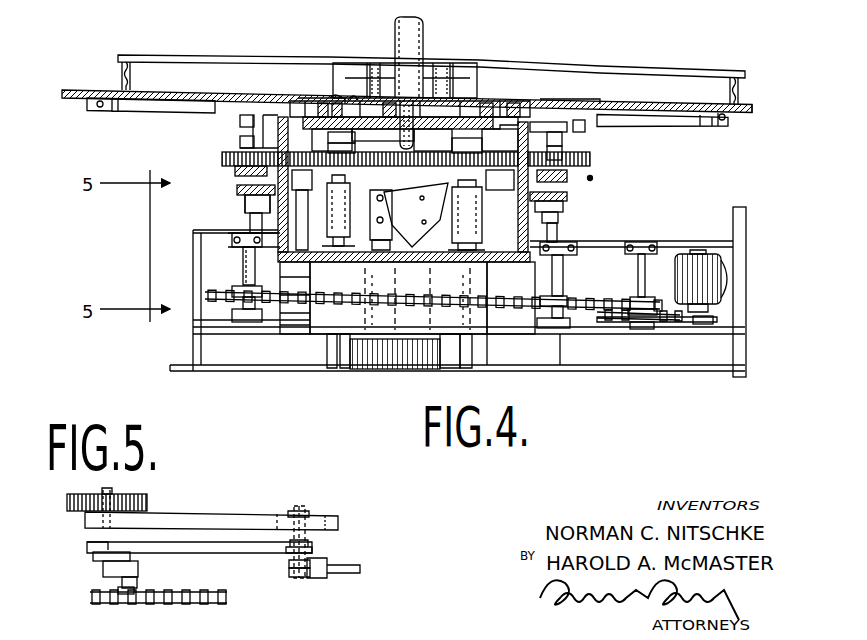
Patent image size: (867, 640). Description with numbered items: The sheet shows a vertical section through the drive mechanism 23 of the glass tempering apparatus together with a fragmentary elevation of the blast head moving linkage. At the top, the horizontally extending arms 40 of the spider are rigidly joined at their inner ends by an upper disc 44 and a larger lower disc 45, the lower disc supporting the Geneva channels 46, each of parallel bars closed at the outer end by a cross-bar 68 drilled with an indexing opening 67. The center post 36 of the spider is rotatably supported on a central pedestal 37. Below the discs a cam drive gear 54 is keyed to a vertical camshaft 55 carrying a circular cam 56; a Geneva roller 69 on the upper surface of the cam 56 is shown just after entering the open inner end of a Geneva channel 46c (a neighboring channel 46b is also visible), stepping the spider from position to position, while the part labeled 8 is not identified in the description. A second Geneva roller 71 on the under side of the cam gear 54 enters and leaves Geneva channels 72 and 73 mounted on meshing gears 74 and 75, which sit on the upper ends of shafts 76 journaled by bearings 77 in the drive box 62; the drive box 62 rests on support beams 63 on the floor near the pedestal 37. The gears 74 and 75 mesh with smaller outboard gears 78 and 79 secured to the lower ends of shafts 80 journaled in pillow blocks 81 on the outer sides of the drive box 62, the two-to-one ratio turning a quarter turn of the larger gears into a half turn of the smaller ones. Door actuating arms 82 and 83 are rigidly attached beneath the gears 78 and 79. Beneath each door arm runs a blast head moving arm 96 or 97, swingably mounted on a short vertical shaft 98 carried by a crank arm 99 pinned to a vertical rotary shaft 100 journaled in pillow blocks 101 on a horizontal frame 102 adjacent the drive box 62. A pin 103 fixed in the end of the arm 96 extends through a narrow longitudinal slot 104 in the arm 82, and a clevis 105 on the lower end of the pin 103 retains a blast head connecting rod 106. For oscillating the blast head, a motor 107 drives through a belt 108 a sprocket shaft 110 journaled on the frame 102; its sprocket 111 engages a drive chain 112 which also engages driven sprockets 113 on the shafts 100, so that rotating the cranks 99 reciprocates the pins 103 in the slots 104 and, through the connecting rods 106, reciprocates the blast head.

In FIG. 4, the bearing block 8 is at (562, 151).
In FIG. 4, the drive mechanism 23 is at (598, 391).
In FIG. 4, the center post 36 is at (421, 37).
In FIG. 4, the central pedestal 37 is at (362, 263).
In FIG. 4, the horizontally extending arms 40 is at (605, 68).
In FIG. 4, the upper disc 44 is at (510, 62).
In FIG. 4, the lower disc 45 is at (749, 105).
In FIG. 4, the Geneva channels 46 is at (124, 112).
In FIG. 4, the support bar portion 46b is at (542, 100).
In FIG. 4, the Geneva channel 46c is at (300, 100).
In FIG. 4, the cam drive gear 54 is at (562, 139).
In FIG. 4, the vertical camshaft 55 is at (452, 122).
In FIG. 4, the circular cam 56 is at (531, 124).
In FIG. 4, the drive box 62 is at (498, 271).
In FIG. 4, the support beams 63 is at (306, 273).
In FIG. 4, the indexing openings 67 is at (94, 105).
In FIG. 4, the cross-bars 68 is at (715, 124).
In FIG. 4, the Geneva roller 69 is at (350, 97).
In FIG. 4, the second Geneva roller 71 is at (318, 138).
In FIG. 4, the Geneva channel 72 is at (320, 150).
In FIG. 4, the Geneva channel 73 is at (484, 152).
In FIG. 4, the meshing gear 74 is at (315, 169).
In FIG. 4, the meshing gear 75 is at (515, 168).
In FIG. 4, the shafts 76 is at (344, 186).
In FIG. 4, the bearings 77 is at (336, 246).
In FIG. 4, the smaller outboard gear 78 is at (222, 158).
In FIG. 4, the smaller outboard gear 79 is at (592, 166).
In FIG. 4, the shafts 80 is at (240, 140).
In FIG. 4, the pillow blocks 81 is at (240, 121).
In FIG. 4, the arm 82 is at (237, 190).
In FIG. 5, the arm 82 is at (213, 512).
In FIG. 4, the arm 83 is at (585, 182).
In FIG. 4, the blast head moving arm 96 is at (245, 197).
In FIG. 5, the blast head moving arm 96 is at (222, 553).
In FIG. 4, the blast head moving arm 97 is at (566, 202).
In FIG. 4, the short vertical shaft 98 is at (561, 215).
In FIG. 5, the short vertical shaft 98 is at (88, 546).
In FIG. 4, the crank arm 99 is at (232, 240).
In FIG. 5, the crank arm 99 is at (103, 571).
In FIG. 4, the vertical rotary shaft 100 is at (243, 268).
In FIG. 5, the vertical rotary shaft 100 is at (134, 581).
In FIG. 4, the pillow blocks 101 is at (240, 248).
In FIG. 4, the horizontal frame 102 is at (243, 338).
In FIG. 5, the pin 103 is at (298, 510).
In FIG. 5, the narrow longitudinal slot 104 is at (330, 517).
In FIG. 5, the clevis 105 is at (308, 578).
In FIG. 5, the blast head connecting rod 106 is at (331, 561).
In FIG. 4, the motor 107 is at (681, 254).
In FIG. 4, the belt 108 is at (668, 326).
In FIG. 4, the sprocket shaft 110 is at (638, 278).
In FIG. 4, the sprocket 111 is at (631, 298).
In FIG. 4, the drive chain 112 is at (498, 306).
In FIG. 5, the drive chain 112 is at (222, 603).
In FIG. 4, the driven sprockets 113 is at (234, 300).
In FIG. 5, the driven sprockets 113 is at (140, 589).